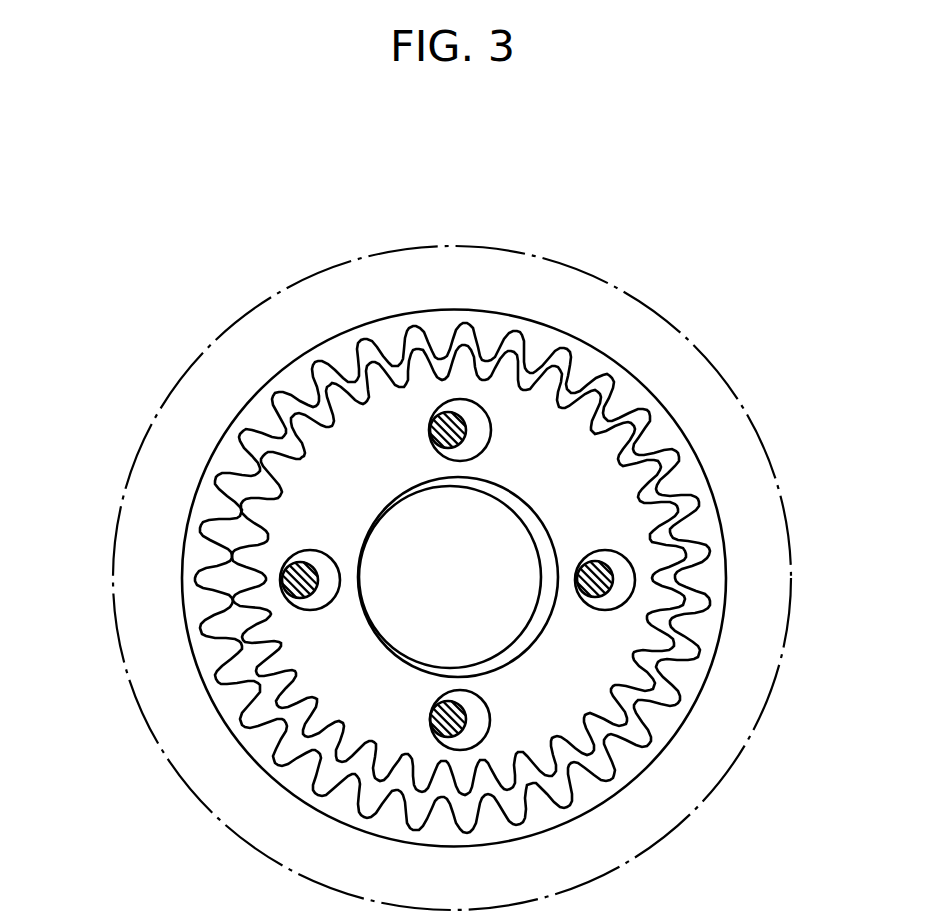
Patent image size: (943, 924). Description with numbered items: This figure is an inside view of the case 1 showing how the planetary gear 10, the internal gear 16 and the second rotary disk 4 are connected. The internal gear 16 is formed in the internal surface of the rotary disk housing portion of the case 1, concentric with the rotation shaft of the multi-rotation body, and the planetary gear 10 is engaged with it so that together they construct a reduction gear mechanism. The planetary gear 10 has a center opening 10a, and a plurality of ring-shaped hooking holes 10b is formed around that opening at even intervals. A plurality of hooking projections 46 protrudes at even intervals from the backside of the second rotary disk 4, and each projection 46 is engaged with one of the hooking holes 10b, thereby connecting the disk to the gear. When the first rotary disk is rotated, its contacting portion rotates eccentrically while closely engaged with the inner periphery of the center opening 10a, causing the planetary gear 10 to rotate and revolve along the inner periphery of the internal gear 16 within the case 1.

The case 1 is at (348, 370).
The second rotary disk 4 is at (158, 412).
The planetary gear 10 is at (530, 428).
The center opening 10a is at (553, 545).
The hooking holes 10b is at (487, 413).
The internal gear 16 is at (265, 405).
The hooking projections 46 is at (433, 413).